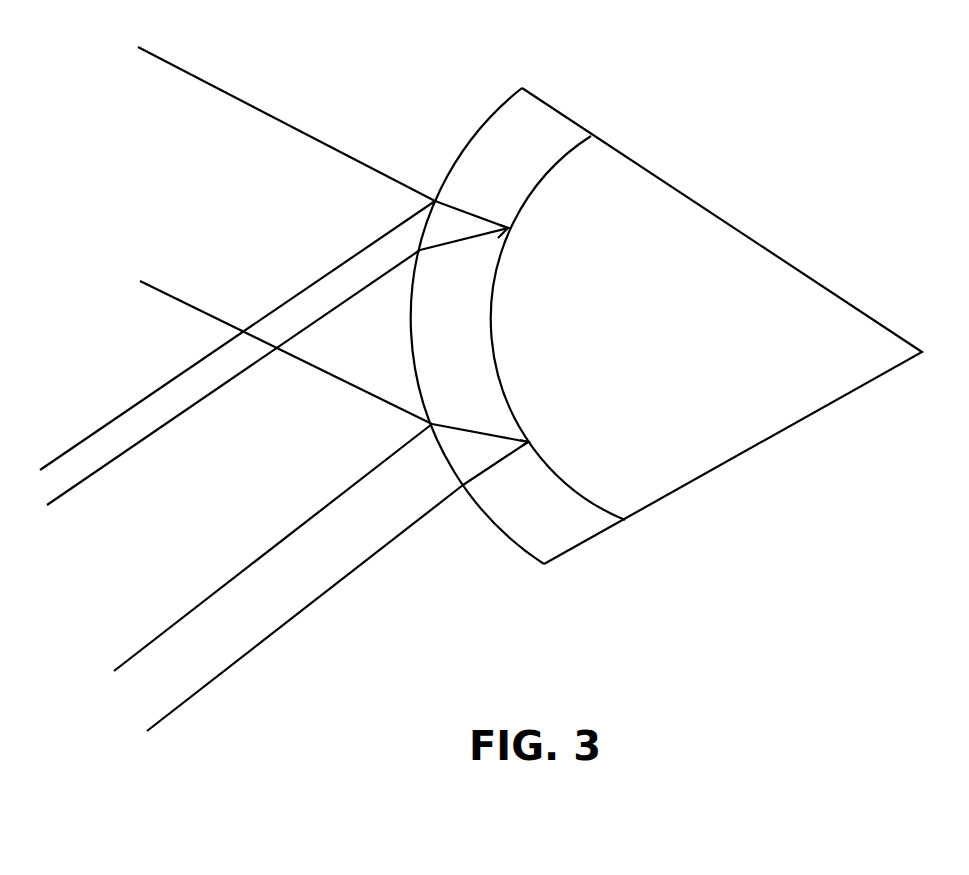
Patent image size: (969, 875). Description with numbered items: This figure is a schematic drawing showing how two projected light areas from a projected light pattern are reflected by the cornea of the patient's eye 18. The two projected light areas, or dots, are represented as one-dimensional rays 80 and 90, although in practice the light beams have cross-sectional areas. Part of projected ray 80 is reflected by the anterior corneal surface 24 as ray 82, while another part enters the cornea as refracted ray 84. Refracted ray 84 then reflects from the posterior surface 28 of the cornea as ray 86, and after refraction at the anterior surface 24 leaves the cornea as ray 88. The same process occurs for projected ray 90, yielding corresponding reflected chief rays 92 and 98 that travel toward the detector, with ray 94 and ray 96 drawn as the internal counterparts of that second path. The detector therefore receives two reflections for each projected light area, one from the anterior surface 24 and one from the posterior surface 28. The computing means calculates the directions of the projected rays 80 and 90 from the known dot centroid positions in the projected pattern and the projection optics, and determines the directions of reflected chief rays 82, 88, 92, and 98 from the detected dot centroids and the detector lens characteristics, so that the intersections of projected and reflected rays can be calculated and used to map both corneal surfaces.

The patient's eye 18 is at (720, 186).
The anterior surface 24 is at (487, 118).
The posterior surface 28 is at (573, 144).
The projected ray 80 is at (257, 105).
The reflected ray 82 is at (133, 406).
The refracted ray 84 is at (455, 205).
The reflected ray 86 is at (510, 233).
The reflected ray 88 is at (140, 441).
The projected ray 90 is at (200, 310).
The reflected chief ray 92 is at (145, 645).
The second prism facet 94 is at (508, 437).
The second prism apex 96 is at (493, 467).
The reflected chief ray 98 is at (172, 712).